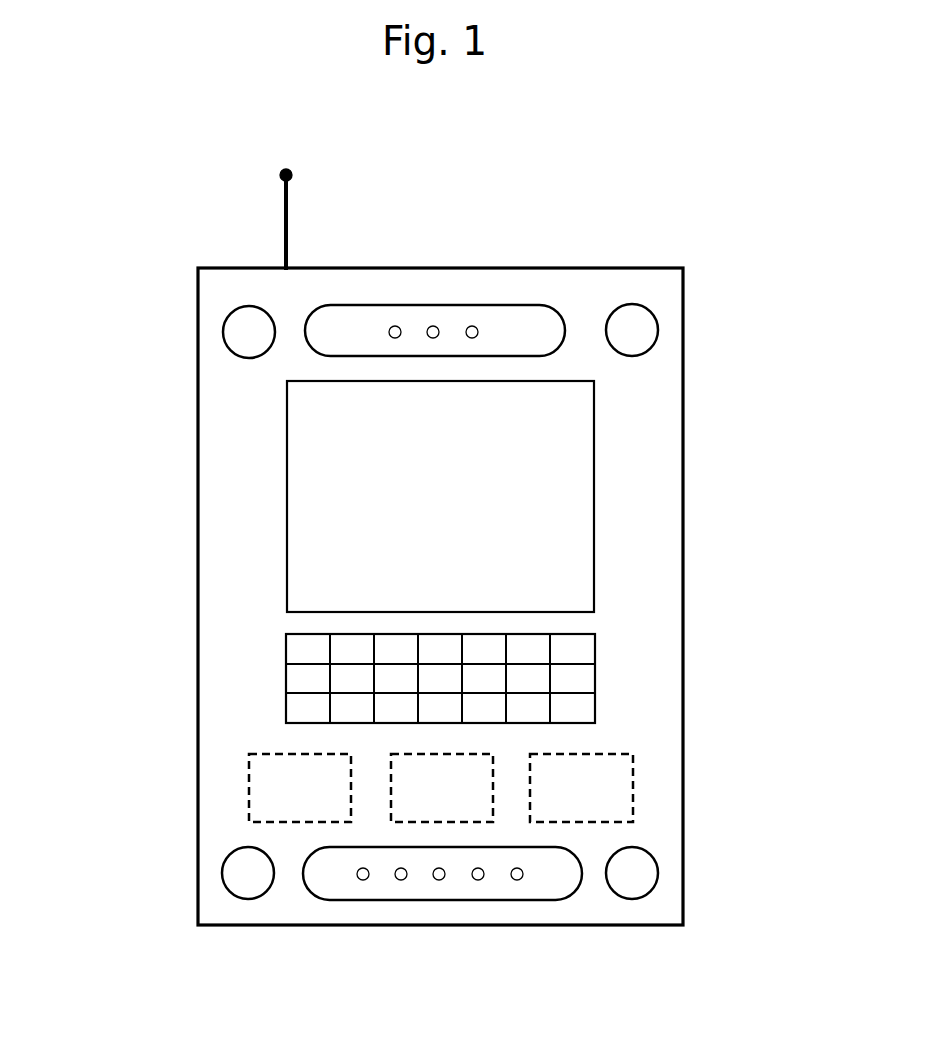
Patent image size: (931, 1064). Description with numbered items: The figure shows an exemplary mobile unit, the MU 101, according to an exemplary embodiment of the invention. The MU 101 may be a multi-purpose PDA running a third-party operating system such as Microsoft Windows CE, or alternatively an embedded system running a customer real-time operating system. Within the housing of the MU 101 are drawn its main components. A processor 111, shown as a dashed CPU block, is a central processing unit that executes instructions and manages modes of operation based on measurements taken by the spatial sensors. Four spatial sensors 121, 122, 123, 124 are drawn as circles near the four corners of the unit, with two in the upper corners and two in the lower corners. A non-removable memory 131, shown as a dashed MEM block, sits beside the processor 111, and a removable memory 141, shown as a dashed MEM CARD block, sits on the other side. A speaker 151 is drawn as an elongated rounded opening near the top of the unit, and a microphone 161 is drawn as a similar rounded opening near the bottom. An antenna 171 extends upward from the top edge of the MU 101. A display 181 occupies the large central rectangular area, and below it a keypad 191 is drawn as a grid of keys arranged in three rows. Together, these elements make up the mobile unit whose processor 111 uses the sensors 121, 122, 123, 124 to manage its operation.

The mobile unit (MU) 101 is at (598, 220).
The processor 111 is at (462, 823).
The spatial sensor 121 is at (223, 330).
The spatial sensor 122 is at (658, 330).
The spatial sensor 123 is at (222, 874).
The spatial sensor 124 is at (658, 873).
The non-removable memory 131 is at (248, 798).
The removable memory 141 is at (633, 787).
The speaker 151 is at (435, 305).
The microphone 161 is at (442, 900).
The antenna 171 is at (293, 175).
The display 181 is at (595, 497).
The keypad 191 is at (595, 678).